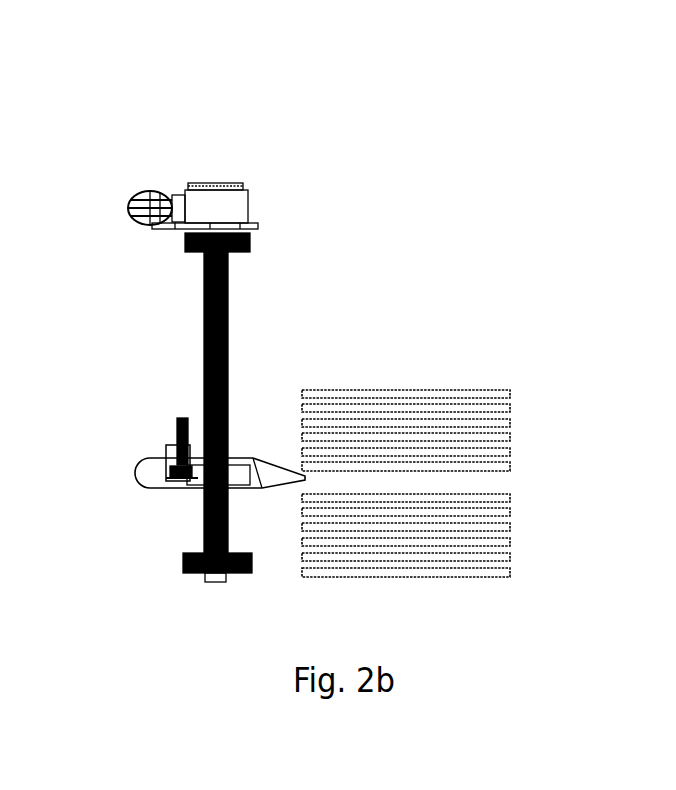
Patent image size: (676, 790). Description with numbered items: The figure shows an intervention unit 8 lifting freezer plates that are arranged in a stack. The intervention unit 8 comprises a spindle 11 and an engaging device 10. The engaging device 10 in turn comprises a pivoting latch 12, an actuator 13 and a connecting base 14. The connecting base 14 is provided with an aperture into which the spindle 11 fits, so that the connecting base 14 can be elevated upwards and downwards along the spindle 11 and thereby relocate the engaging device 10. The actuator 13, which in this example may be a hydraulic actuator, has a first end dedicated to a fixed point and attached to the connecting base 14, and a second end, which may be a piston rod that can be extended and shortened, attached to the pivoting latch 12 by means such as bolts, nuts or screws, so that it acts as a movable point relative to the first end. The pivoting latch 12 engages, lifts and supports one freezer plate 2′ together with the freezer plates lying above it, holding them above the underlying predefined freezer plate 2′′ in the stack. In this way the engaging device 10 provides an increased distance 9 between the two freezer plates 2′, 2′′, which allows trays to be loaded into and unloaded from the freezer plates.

The intervention unit 8 is at (181, 310).
The increased distance 9 is at (476, 483).
The engaging device 10 is at (170, 467).
The spindle 11 is at (200, 297).
The pivoting latch 12 is at (260, 475).
The actuator 13 is at (157, 452).
The connecting base 14 is at (160, 476).
The freezer plate 2′ is at (508, 463).
The underlying predefined freezer plate 2′′ is at (508, 501).